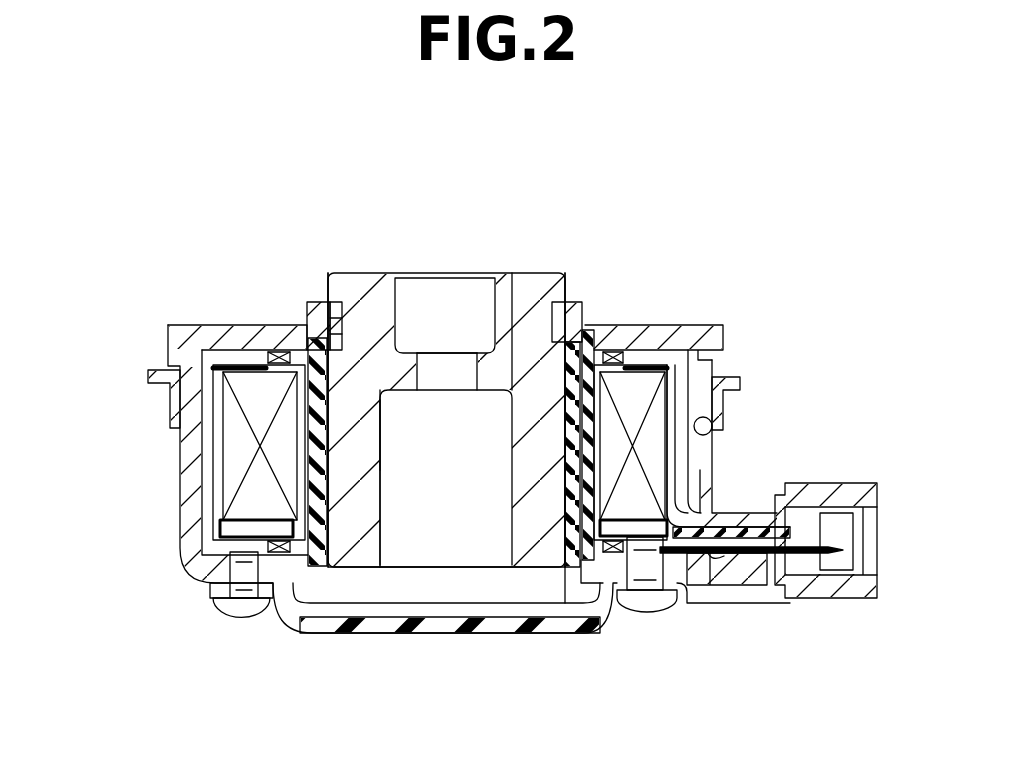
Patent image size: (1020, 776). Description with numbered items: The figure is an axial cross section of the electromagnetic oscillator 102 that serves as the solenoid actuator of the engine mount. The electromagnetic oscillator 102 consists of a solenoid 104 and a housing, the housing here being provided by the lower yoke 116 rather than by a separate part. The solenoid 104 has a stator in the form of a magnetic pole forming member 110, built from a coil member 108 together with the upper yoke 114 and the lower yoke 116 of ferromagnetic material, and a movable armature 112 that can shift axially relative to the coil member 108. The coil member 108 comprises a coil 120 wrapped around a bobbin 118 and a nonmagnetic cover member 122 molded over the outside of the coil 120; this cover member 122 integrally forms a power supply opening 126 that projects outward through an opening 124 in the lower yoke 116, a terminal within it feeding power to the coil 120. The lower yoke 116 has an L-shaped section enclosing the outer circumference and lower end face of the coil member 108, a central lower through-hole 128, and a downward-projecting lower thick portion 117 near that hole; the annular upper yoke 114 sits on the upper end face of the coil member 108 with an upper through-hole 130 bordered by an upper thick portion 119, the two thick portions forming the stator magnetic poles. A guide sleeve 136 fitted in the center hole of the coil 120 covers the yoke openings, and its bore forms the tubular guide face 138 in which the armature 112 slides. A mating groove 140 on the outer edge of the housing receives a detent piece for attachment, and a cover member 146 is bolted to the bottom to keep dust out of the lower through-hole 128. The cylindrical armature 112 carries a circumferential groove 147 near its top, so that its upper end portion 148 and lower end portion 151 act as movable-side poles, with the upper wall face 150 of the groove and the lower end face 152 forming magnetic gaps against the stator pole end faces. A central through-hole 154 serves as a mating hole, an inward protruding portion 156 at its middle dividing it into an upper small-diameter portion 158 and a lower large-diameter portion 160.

The electromagnetic oscillator 102 is at (612, 122).
The solenoid 104 is at (590, 210).
The coil member 108 is at (708, 467).
The magnetic pole forming member 110 is at (744, 320).
The armature 112 is at (380, 262).
The upper yoke 114 is at (226, 353).
The lower yoke 116 is at (192, 454).
The lower thick portion 117 is at (578, 555).
The bobbin 118 is at (590, 430).
The upper thick portion 119 is at (577, 302).
The coil 120 is at (642, 443).
The cover member 122 is at (662, 350).
The opening 124 is at (723, 437).
The power supply opening 126 is at (805, 498).
The lower through-hole 128 is at (345, 600).
The upper through-hole 130 is at (323, 303).
The guide sleeve 136 is at (330, 470).
The tubular guide face 138 is at (545, 508).
The mating groove 140 is at (168, 370).
The cover member 146 is at (492, 625).
The circumferential groove 147 is at (228, 336).
The upper end portion 148 is at (523, 290).
The upper wall face 150 is at (333, 305).
The lower end portion 151 is at (372, 560).
The lower end face 152 is at (360, 570).
The through-hole 154 is at (400, 130).
The inward protruding portion 156 is at (402, 372).
The small-diameter portion 158 is at (488, 300).
The large-diameter portion 160 is at (502, 432).